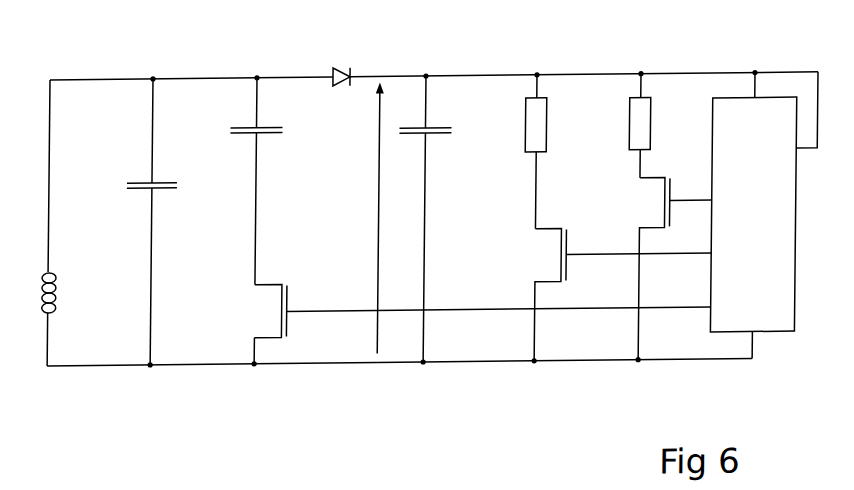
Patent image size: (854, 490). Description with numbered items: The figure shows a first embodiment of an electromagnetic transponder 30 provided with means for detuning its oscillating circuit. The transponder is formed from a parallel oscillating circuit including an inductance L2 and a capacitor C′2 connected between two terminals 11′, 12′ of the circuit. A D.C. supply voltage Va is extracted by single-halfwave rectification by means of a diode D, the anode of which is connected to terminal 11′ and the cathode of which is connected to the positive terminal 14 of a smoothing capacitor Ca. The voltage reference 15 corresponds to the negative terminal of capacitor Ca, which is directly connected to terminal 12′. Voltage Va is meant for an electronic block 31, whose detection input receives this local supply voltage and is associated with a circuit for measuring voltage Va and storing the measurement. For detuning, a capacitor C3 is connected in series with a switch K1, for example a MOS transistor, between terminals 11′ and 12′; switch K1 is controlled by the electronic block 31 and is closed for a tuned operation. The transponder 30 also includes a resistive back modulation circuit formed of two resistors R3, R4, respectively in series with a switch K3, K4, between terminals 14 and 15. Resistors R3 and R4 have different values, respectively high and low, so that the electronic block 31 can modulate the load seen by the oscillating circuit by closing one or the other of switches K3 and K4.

The terminal 11′ is at (173, 76).
The terminal 12′ is at (100, 362).
The positive terminal 14 is at (478, 76).
The voltage reference 15 is at (402, 362).
The transponder 30 is at (272, 404).
The electronic block 31 is at (772, 336).
The inductance L2 is at (63, 293).
The capacitor C′2 is at (157, 222).
The capacitor C3 is at (259, 181).
The switch K1 is at (265, 310).
The diode D is at (340, 62).
The D.C. supply voltage Va is at (391, 217).
The capacitor Ca is at (427, 219).
The resistor R3 is at (551, 151).
The resistor R4 is at (656, 125).
The switch K3 is at (551, 256).
The switch K4 is at (646, 200).